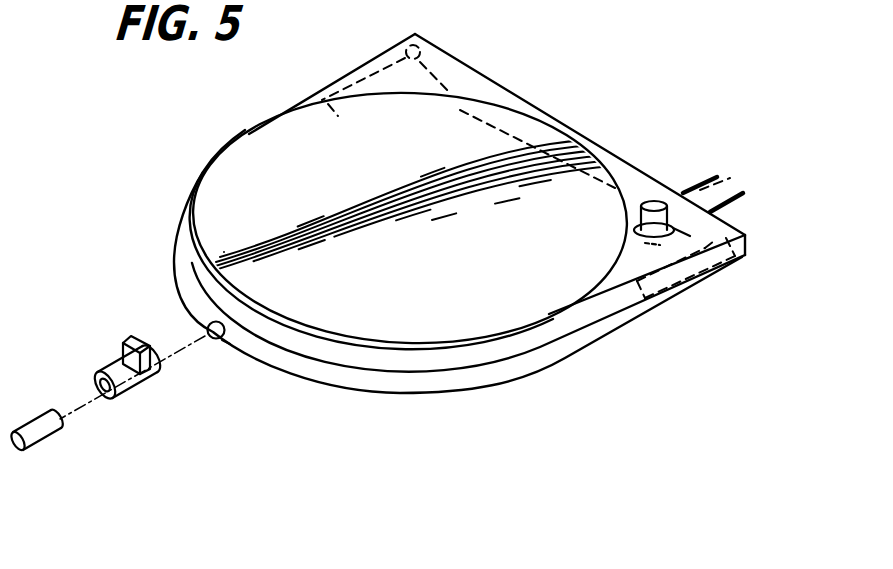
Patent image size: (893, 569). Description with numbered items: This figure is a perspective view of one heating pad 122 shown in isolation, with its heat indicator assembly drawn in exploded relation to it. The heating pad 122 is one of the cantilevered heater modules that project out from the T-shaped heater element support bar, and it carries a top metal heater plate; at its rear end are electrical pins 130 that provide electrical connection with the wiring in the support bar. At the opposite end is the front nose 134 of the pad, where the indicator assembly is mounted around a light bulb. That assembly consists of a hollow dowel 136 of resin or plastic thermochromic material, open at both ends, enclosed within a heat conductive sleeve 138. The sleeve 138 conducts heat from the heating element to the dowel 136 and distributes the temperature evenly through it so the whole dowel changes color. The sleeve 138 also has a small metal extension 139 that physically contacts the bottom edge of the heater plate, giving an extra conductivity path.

The heating pad 122 is at (472, 148).
The electrical pins 130 is at (743, 197).
The front nose 134 is at (200, 318).
The dowel 136 is at (30, 434).
The heat conductive sleeve 138 is at (123, 388).
The extension 139 is at (124, 342).